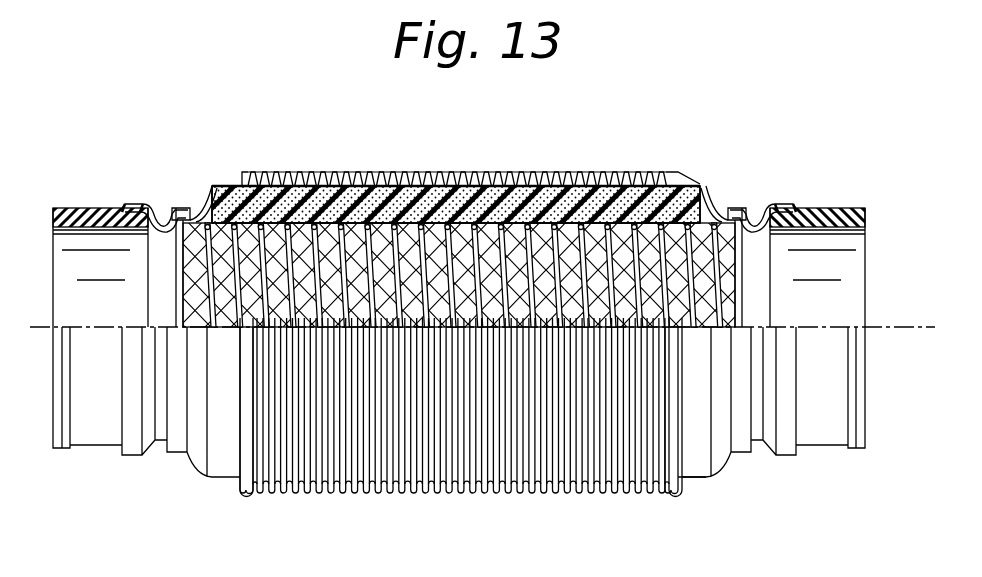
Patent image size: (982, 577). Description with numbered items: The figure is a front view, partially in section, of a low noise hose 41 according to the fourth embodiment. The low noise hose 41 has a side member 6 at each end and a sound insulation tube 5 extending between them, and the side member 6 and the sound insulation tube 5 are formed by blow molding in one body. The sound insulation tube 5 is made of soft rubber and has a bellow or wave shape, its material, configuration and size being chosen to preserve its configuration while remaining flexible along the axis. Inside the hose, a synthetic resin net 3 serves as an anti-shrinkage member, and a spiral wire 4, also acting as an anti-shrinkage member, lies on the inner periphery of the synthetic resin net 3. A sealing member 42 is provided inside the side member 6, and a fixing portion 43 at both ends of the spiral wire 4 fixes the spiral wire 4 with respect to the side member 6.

The synthetic resin net 3 is at (198, 266).
The spiral wire 4 is at (200, 301).
The sound insulation tube 5 is at (566, 172).
The side member 6 is at (136, 205).
The low noise hose 41 is at (311, 168).
The sealing member 42 is at (100, 209).
The fixing portion 43 is at (184, 208).